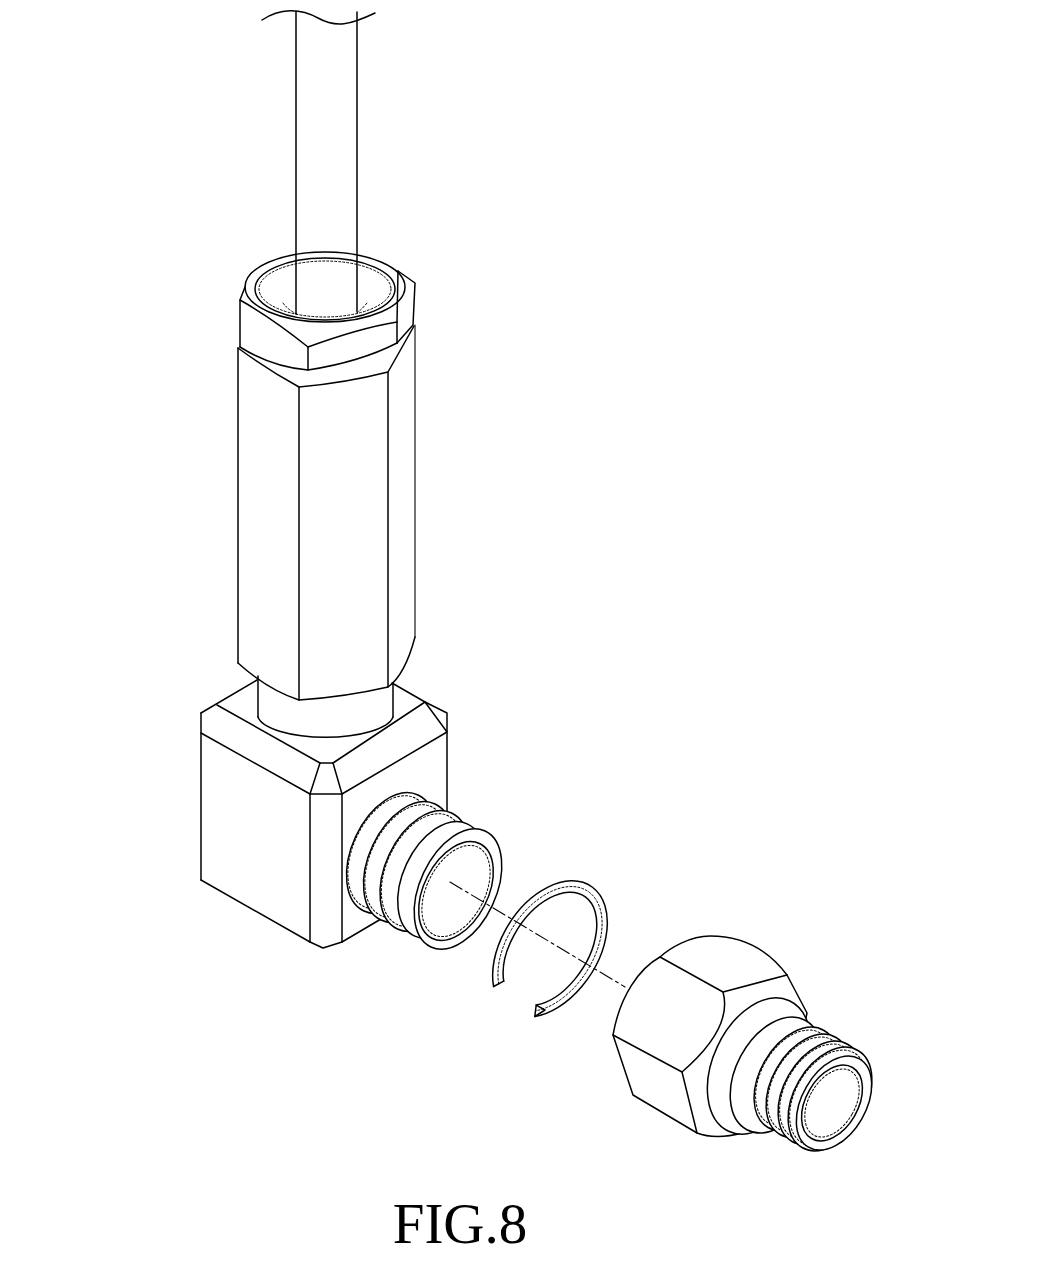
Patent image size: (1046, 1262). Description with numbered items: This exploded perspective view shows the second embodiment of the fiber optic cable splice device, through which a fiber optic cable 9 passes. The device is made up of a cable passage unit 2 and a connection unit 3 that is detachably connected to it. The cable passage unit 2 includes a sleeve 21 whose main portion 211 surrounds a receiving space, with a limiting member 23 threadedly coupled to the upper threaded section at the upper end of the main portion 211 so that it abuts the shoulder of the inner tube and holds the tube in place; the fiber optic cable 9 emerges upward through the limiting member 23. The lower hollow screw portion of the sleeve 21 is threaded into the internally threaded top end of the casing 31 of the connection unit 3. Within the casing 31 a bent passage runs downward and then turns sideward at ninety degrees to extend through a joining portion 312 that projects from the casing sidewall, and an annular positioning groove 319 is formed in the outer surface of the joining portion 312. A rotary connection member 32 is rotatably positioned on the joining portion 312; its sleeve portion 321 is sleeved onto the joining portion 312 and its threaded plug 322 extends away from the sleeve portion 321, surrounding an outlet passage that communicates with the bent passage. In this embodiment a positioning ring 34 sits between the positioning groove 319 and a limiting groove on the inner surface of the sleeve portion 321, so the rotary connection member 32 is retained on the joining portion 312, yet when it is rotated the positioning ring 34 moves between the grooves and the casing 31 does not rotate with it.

The cable passage unit 2 is at (497, 361).
The fiber optic cable 9 is at (345, 95).
The limiting member 23 is at (404, 277).
The sleeve 21 is at (190, 401).
The main portion 211 is at (243, 483).
The connection unit 3 is at (616, 663).
The casing 31 is at (170, 792).
The positioning groove 319 is at (411, 808).
The joining portion 312 is at (500, 858).
The positioning ring 34 is at (572, 885).
The rotary connection member 32 is at (817, 958).
The sleeve portion 321 is at (733, 960).
The threaded plug 322 is at (822, 1036).